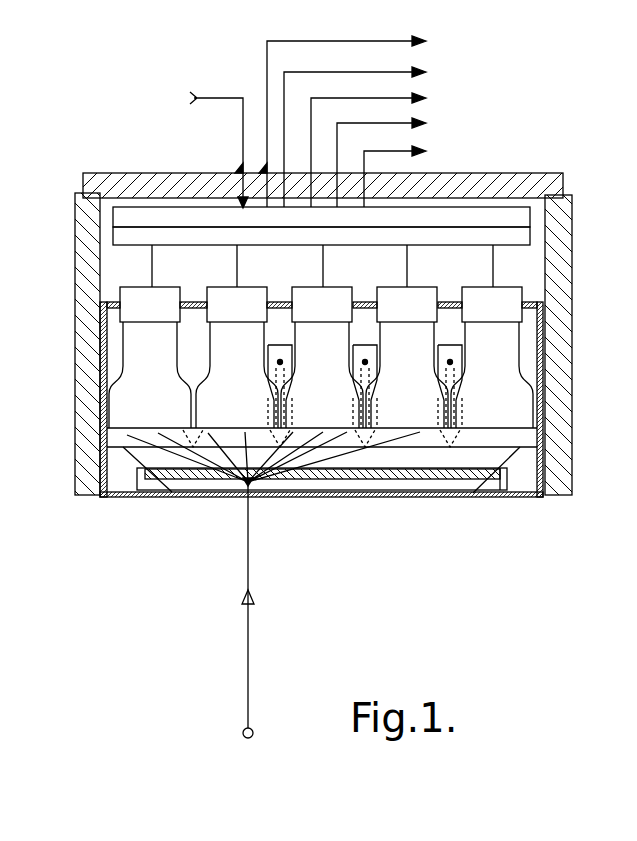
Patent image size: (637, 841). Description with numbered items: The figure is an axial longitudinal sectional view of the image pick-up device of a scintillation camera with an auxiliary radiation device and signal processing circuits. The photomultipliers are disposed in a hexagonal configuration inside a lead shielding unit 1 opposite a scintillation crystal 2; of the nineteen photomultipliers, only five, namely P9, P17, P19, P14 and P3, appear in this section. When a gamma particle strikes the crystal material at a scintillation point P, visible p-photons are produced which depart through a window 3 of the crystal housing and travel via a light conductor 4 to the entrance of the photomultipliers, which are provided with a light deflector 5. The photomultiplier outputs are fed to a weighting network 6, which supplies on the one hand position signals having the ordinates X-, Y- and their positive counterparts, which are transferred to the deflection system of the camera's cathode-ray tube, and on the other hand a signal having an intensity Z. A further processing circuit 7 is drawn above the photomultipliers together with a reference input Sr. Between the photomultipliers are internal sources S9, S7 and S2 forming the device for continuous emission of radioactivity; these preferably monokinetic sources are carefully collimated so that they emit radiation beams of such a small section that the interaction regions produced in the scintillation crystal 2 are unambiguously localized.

The lead shielding unit 1 is at (70, 350).
The scintillation crystal 2 is at (187, 482).
The window 3 is at (396, 475).
The light conductor 4 is at (490, 459).
The light deflector 5 is at (127, 434).
The weighting network 6 is at (195, 236).
The signal processing circuit 7 is at (466, 221).
The scintillation point P is at (248, 482).
The photomultiplier P9 is at (151, 422).
The photomultiplier P17 is at (244, 422).
The photomultiplier P19 is at (334, 422).
The photomultiplier P14 is at (425, 422).
The photomultiplier P3 is at (501, 422).
The internal source S9 is at (282, 344).
The internal source S7 is at (366, 344).
The internal source S2 is at (452, 344).
The reference signal input Sr is at (219, 137).
The intensity signal Z is at (351, 117).
The X− ordinate signal X- is at (387, 146).
The Y− ordinate signal Y- is at (412, 172).